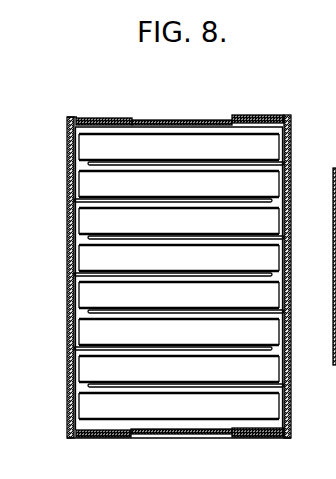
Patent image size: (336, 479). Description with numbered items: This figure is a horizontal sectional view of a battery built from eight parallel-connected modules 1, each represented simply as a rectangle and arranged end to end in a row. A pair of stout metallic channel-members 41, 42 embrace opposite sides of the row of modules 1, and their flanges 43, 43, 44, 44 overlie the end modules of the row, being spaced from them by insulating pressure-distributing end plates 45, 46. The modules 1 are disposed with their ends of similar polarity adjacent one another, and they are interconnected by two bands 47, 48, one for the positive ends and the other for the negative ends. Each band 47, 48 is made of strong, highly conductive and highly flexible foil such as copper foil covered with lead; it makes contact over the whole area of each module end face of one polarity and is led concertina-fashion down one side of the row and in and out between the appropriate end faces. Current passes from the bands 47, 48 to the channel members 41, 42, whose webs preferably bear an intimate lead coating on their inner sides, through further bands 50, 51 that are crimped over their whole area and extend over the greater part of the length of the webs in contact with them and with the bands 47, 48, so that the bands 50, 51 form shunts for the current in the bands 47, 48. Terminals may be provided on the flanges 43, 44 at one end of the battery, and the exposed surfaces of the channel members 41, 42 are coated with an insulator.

The module 1 is at (88, 249).
The channel member 41 is at (72, 269).
The channel member 42 is at (292, 398).
The flange 43 is at (91, 117).
The flange 44 is at (259, 114).
The insulating pressure-distributing end plate 45 is at (177, 119).
The insulating pressure-distributing end plate 46 is at (215, 436).
The band 47 is at (83, 201).
The band 48 is at (270, 233).
The band 50 is at (71, 328).
The band 51 is at (289, 329).